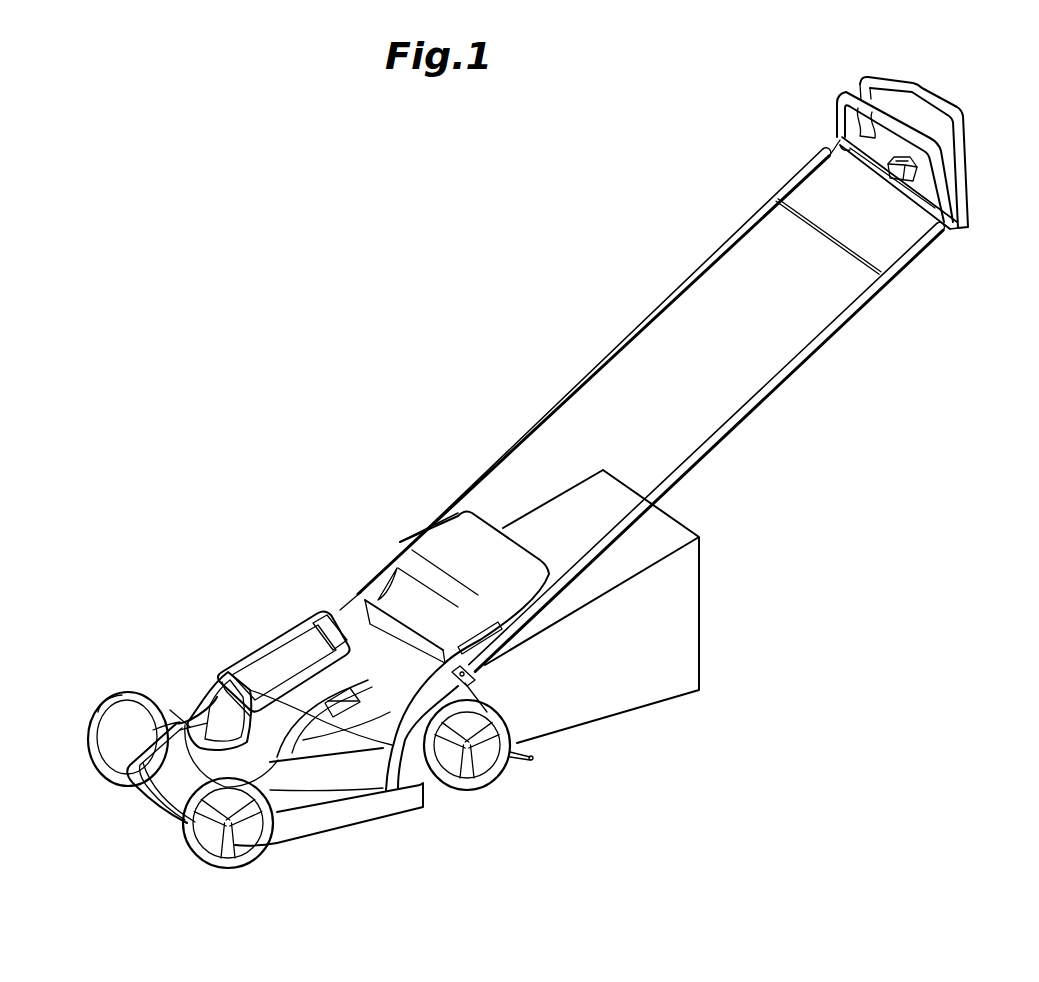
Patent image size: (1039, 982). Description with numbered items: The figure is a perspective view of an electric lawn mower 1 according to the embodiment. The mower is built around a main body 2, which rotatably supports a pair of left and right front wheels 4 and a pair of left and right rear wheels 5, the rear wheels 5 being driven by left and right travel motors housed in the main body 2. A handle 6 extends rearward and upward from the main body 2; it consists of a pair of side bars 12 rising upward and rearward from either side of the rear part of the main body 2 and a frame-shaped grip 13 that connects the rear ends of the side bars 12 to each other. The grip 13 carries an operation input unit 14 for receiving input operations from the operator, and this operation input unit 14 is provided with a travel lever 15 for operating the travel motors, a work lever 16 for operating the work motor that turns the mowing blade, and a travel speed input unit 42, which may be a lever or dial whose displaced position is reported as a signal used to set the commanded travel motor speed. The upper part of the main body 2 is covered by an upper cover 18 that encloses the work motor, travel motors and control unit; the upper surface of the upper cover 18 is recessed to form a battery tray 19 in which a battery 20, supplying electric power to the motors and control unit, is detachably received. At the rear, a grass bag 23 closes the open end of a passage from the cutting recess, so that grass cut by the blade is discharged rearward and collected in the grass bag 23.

The electric lawn mower 1 is at (348, 462).
The main body 2 is at (168, 786).
The front wheels 4 is at (113, 707).
The rear wheels 5 is at (486, 790).
The handle 6 is at (900, 303).
The side bars 12 is at (610, 357).
The grip 13 is at (848, 92).
The operation input unit 14 is at (960, 103).
The travel lever 15 is at (875, 76).
The work lever 16 is at (964, 136).
The upper cover 18 is at (293, 733).
The battery tray 19 is at (217, 708).
The battery 20 is at (278, 653).
The grass bag 23 is at (682, 627).
The travel speed input unit 42 is at (920, 170).